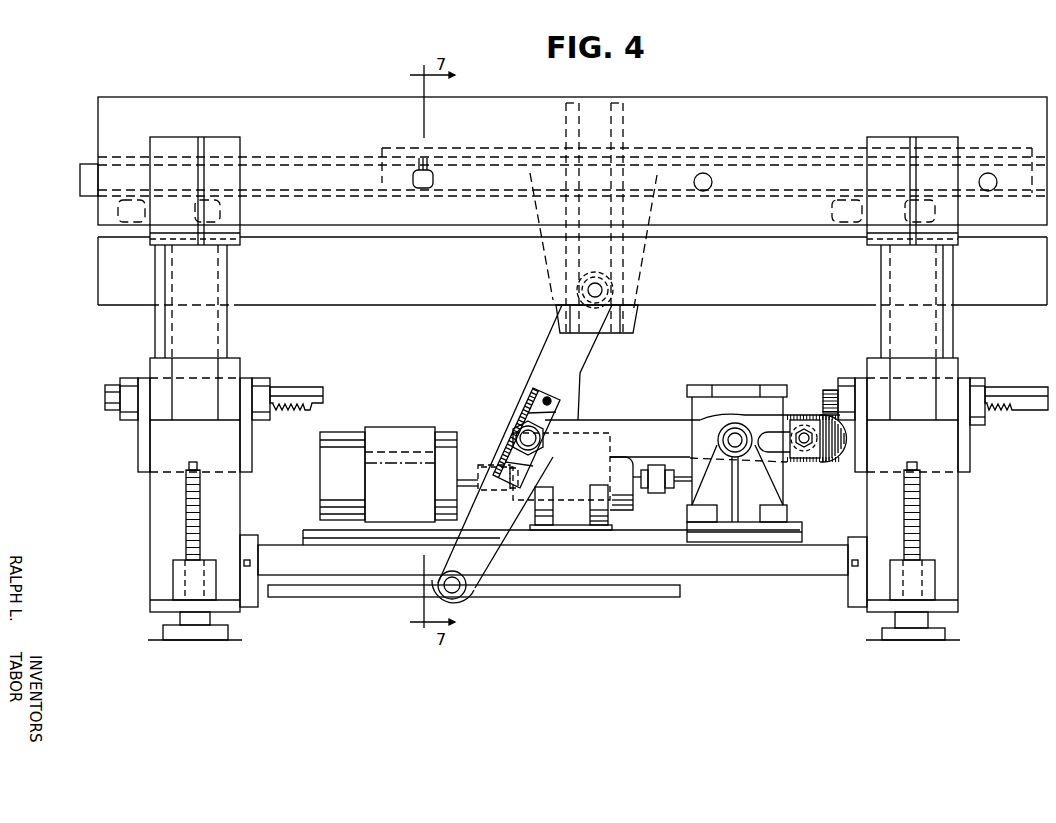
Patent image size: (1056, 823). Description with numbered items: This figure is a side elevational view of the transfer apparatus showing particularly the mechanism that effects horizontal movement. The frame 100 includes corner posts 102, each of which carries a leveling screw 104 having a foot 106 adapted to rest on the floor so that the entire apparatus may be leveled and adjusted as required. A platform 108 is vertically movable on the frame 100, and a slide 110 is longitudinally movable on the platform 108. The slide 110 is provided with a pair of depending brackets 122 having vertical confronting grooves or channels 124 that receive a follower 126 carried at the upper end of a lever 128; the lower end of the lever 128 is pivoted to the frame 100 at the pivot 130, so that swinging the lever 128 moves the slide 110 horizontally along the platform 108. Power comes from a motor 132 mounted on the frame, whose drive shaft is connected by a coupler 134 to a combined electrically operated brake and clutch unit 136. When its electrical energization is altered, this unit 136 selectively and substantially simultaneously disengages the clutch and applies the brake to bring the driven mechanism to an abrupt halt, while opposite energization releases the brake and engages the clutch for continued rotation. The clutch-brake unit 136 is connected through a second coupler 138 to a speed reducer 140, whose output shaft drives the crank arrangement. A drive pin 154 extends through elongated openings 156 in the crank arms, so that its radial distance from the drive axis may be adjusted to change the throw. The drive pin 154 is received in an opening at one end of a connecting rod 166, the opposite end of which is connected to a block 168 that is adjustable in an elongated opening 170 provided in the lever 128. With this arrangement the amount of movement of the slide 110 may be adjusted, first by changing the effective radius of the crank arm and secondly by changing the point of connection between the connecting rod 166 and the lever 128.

The frame 100 is at (808, 577).
The corner post 102 is at (960, 563).
The leveling screw 104 is at (921, 513).
The foot 106 is at (946, 630).
The platform 108 is at (80, 183).
The slide 110 is at (96, 104).
The depending bracket 122 is at (557, 318).
The groove 124 is at (618, 255).
The follower 126 is at (583, 282).
The lever 128 is at (590, 356).
The pivot 130 is at (468, 590).
The motor 132 is at (386, 427).
The coupler 134 is at (488, 462).
The combined electrically operated brake and clutch unit 136 is at (623, 510).
The coupler 138 is at (661, 497).
The speed reducer 140 is at (702, 396).
The pin 154 is at (804, 432).
The elongated opening 156 is at (830, 466).
The connecting rod 166 is at (628, 420).
The block 168 is at (533, 388).
The elongated opening 170 is at (549, 398).